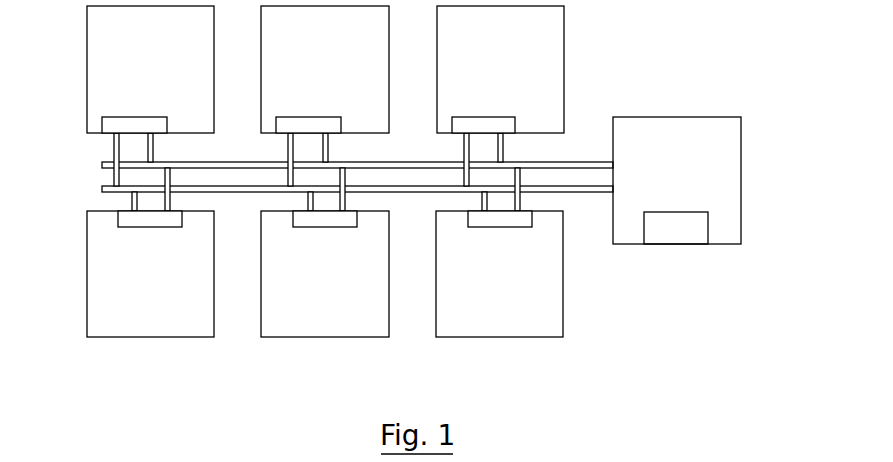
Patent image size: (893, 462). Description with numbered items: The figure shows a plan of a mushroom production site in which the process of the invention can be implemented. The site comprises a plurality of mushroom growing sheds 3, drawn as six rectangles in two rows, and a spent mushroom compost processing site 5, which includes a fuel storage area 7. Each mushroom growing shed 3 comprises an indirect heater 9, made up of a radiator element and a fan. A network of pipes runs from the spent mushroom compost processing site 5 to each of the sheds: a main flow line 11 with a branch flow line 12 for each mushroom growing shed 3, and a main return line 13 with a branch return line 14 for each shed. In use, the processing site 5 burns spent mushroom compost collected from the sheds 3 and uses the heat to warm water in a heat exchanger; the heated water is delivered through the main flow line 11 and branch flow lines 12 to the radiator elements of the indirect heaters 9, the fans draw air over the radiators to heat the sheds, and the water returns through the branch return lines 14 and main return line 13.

The mushroom growing shed 3 is at (508, 293).
The spent mushroom compost processing site 5 is at (677, 171).
The fuel storage area 7 is at (708, 230).
The indirect heater 9 is at (167, 125).
The main flow line 11 is at (582, 162).
The branch flow line 12 is at (150, 147).
The main return line 13 is at (583, 192).
The branch return line 14 is at (113, 175).